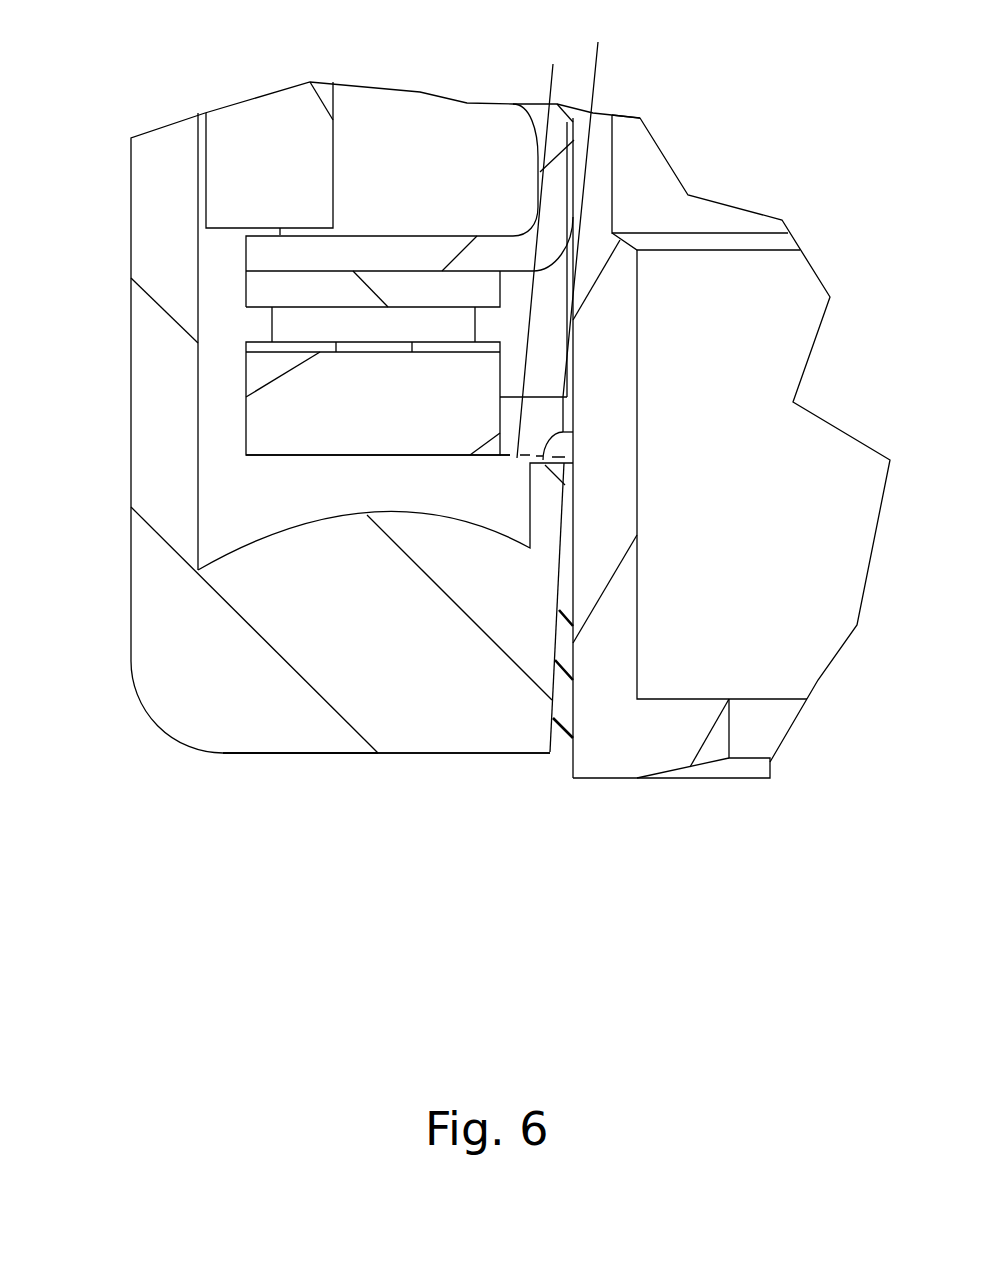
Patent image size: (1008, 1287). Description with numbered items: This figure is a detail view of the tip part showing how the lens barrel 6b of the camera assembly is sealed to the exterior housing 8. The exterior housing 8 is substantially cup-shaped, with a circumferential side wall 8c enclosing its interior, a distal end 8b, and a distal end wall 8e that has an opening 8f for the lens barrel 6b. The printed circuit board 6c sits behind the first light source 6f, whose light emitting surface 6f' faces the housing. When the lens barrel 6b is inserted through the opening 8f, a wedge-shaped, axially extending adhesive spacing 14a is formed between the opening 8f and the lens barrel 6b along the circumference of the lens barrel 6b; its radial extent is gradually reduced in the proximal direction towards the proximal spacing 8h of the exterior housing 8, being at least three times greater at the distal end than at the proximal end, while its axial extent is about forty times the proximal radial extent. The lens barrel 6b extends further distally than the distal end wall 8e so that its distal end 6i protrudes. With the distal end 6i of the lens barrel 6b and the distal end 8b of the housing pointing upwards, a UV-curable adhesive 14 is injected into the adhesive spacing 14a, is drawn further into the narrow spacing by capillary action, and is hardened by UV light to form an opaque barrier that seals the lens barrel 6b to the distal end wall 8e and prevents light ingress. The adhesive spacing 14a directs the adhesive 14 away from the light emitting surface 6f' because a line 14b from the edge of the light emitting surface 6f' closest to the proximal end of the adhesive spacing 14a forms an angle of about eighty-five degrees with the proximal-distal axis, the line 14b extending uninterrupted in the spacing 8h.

The exterior housing 8 is at (155, 753).
The distal end of the exterior housing 8b is at (335, 842).
The circumferential side wall 8c is at (165, 190).
The distal end wall 8e is at (348, 753).
The opening 8f is at (563, 770).
The proximal spacing 8h is at (232, 497).
The lens barrel 6b is at (618, 757).
The printed circuit board 6c is at (246, 254).
The first light source 6f is at (299, 399).
The light emitting surface 6f' is at (287, 454).
The distal end of the lens barrel 6i is at (730, 868).
The UV-curable adhesive 14 is at (565, 602).
The adhesive spacing 14a is at (562, 700).
The line 14b is at (546, 248).